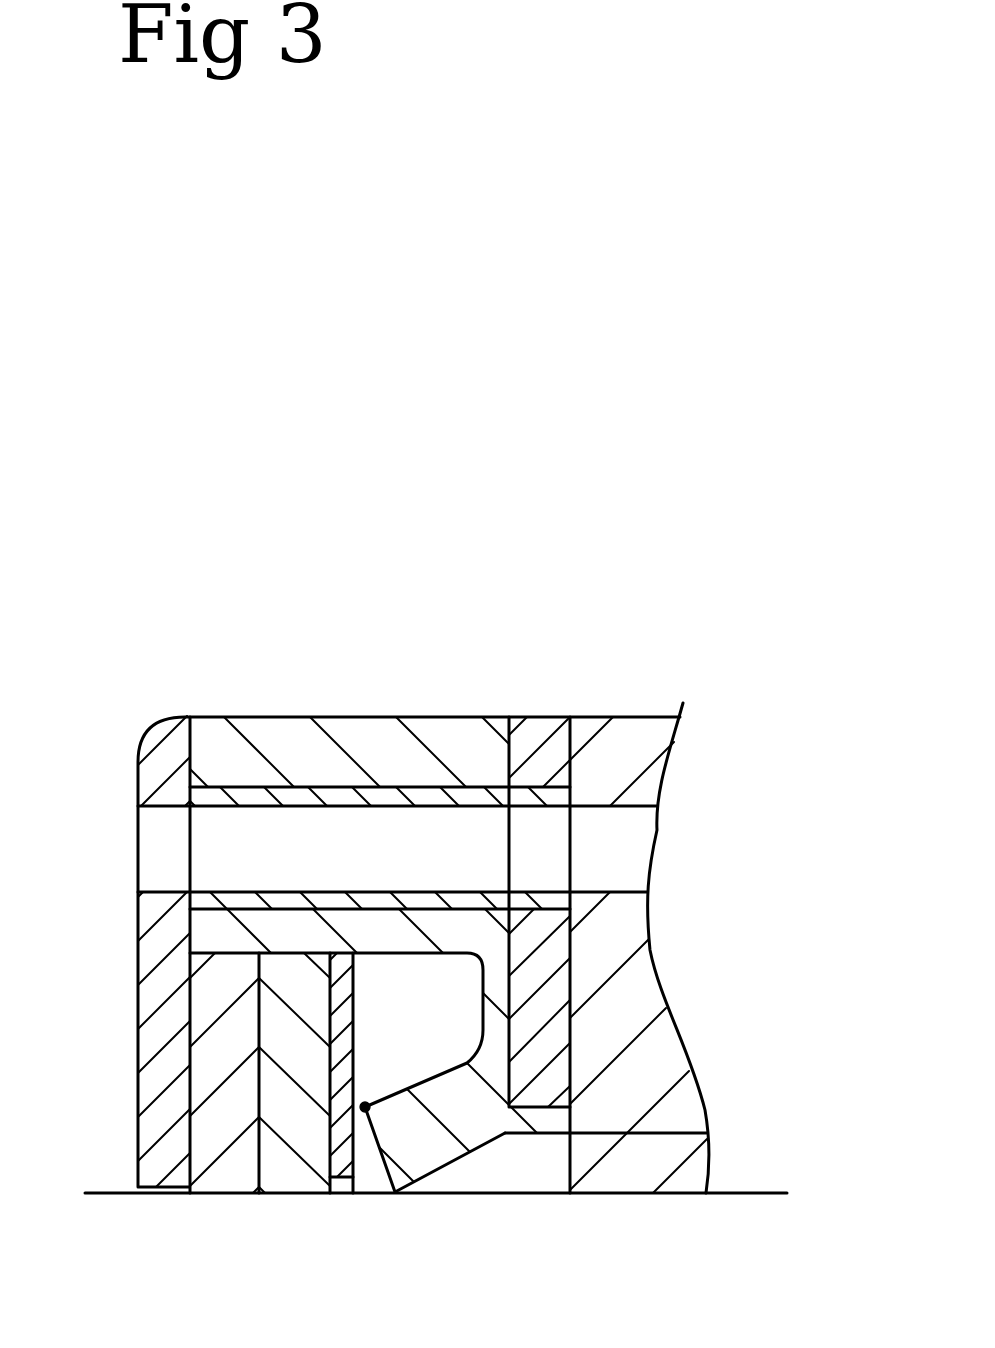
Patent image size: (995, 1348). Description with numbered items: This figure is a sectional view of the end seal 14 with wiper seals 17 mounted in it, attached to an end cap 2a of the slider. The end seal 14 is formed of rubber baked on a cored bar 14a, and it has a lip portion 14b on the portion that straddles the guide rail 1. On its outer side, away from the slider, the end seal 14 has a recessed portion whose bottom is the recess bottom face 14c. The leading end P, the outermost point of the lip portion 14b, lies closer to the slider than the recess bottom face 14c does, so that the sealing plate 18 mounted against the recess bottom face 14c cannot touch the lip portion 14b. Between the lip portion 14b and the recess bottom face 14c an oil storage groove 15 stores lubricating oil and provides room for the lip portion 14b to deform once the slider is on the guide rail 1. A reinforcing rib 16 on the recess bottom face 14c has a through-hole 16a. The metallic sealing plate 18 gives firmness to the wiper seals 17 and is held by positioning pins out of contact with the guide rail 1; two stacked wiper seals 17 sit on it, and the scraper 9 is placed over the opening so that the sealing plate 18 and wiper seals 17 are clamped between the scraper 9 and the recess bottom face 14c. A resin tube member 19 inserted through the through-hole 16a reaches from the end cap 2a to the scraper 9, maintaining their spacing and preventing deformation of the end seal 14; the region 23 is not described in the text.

The guide rail 1 is at (730, 1208).
The end cap 2a is at (622, 733).
The scraper 9 is at (155, 1043).
The end seal 14 is at (404, 704).
The cored bar 14a is at (538, 728).
The lip portion 14b is at (460, 1143).
The recess bottom face 14c is at (343, 1130).
The oil storage groove 15 is at (463, 985).
The rib 16 is at (207, 937).
The through-hole 16a is at (298, 797).
The wiper seal 17 is at (220, 1173).
The sealing plate 18 is at (327, 1173).
The tube member 19 is at (215, 797).
The groove 23 is at (635, 843).
The leading end P is at (365, 1100).